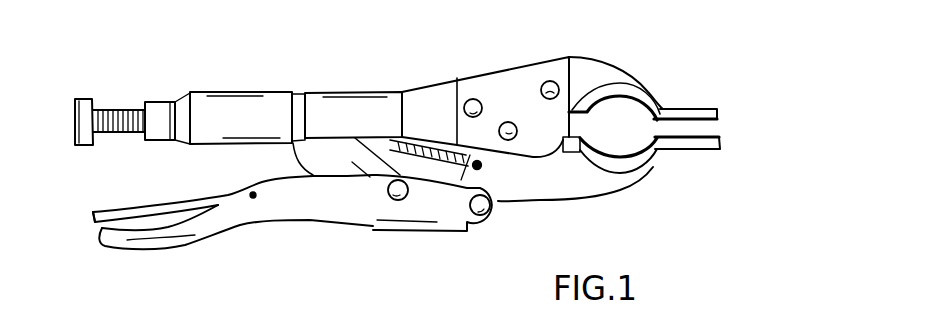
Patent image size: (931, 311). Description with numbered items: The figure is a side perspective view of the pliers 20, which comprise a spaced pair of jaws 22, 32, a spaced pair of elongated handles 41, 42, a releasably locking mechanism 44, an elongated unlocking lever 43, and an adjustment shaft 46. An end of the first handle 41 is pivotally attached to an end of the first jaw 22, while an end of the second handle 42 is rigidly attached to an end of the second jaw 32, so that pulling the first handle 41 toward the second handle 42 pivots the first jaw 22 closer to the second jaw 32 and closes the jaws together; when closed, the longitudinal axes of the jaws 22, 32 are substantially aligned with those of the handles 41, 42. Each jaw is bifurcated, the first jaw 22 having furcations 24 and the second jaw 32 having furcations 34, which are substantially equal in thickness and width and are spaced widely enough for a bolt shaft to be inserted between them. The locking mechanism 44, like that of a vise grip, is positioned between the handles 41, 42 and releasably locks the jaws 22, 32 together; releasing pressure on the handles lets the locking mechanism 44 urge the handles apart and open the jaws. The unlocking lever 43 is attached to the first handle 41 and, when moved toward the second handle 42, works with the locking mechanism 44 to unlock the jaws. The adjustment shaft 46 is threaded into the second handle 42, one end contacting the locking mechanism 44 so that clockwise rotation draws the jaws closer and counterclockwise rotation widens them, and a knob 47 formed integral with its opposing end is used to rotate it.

The pliers 20 is at (493, 72).
The first jaw 22 is at (662, 151).
The furcations 24 is at (719, 149).
The second jaw 32 is at (681, 107).
The furcations 34 is at (717, 108).
The first handle 41 is at (322, 210).
The second handle 42 is at (275, 92).
The unlocking lever 43 is at (103, 208).
The locking mechanism 44 is at (373, 175).
The adjustment shaft 46 is at (113, 110).
The knob 47 is at (75, 143).